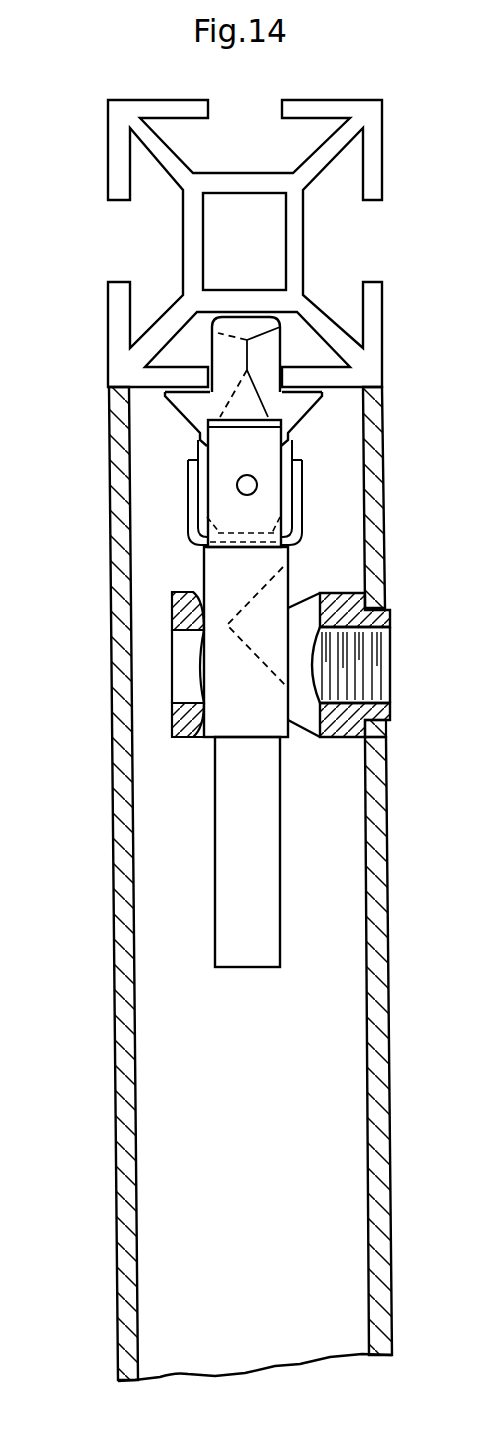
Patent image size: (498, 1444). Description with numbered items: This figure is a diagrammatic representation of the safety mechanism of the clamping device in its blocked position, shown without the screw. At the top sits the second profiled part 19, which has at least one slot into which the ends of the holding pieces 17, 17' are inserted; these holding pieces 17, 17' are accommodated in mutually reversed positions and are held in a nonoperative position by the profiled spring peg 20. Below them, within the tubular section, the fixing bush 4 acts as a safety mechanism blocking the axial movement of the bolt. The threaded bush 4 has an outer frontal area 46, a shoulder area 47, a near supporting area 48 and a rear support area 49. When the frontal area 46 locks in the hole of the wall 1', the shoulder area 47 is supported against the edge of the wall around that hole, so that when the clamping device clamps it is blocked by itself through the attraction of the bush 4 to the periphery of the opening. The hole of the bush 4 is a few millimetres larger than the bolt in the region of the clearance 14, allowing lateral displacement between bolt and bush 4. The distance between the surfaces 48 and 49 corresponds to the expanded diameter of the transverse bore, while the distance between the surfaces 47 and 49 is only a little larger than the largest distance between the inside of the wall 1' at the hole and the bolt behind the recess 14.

The wall 1' is at (278, 884).
The second profiled part 19 is at (130, 98).
The holding piece 17 is at (183, 372).
The holding piece 17' is at (334, 358).
The profiled spring peg 20 is at (300, 498).
The clearance 14 is at (257, 627).
The near supporting area 48 is at (300, 588).
The rear support area 49 is at (206, 729).
The fixing bush 4 is at (352, 597).
The outer frontal area 46 is at (390, 707).
The shoulder area 47 is at (377, 725).